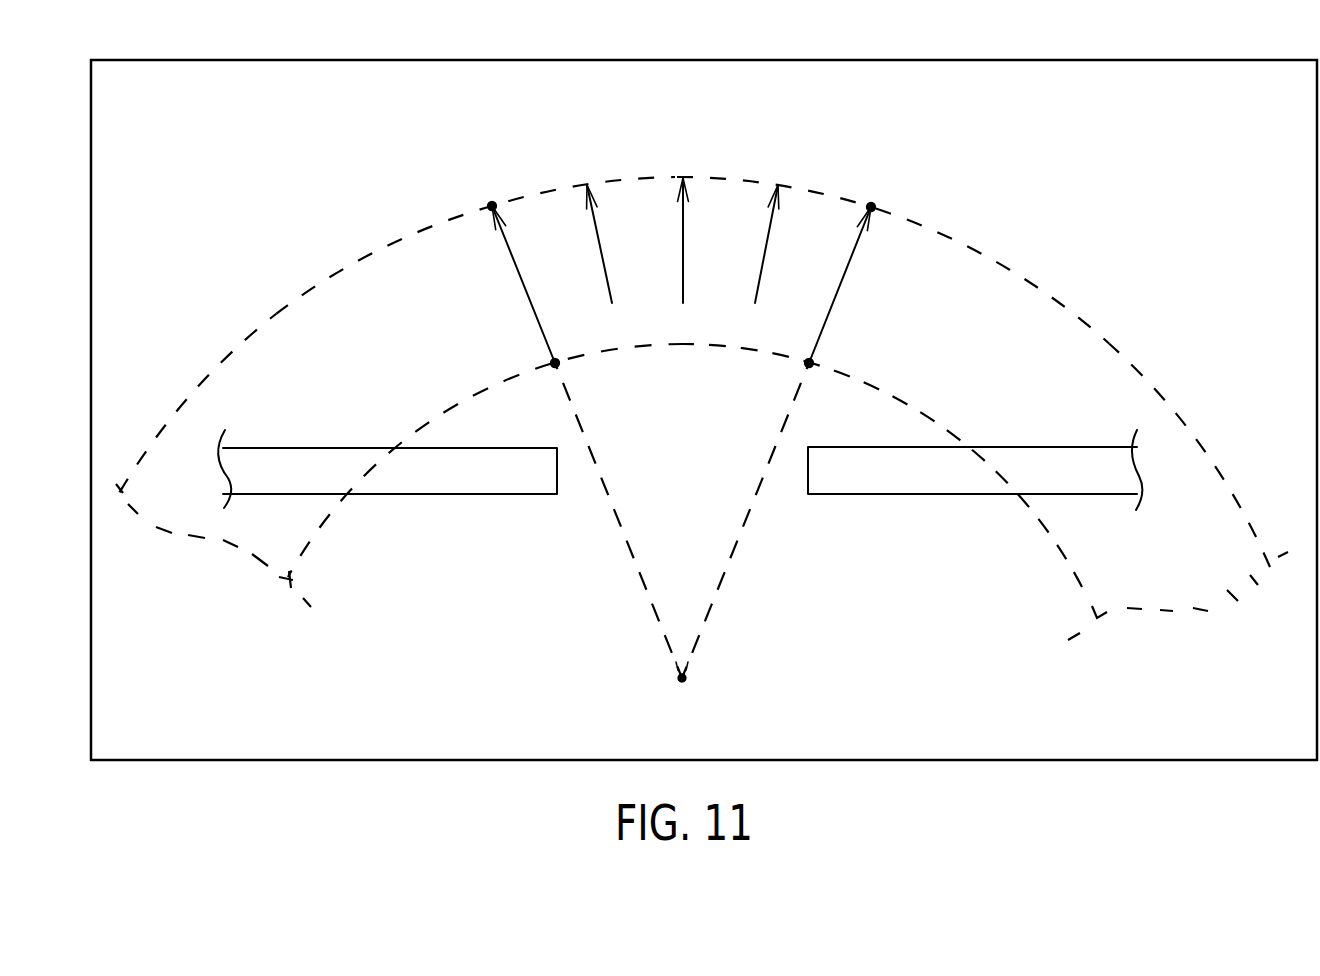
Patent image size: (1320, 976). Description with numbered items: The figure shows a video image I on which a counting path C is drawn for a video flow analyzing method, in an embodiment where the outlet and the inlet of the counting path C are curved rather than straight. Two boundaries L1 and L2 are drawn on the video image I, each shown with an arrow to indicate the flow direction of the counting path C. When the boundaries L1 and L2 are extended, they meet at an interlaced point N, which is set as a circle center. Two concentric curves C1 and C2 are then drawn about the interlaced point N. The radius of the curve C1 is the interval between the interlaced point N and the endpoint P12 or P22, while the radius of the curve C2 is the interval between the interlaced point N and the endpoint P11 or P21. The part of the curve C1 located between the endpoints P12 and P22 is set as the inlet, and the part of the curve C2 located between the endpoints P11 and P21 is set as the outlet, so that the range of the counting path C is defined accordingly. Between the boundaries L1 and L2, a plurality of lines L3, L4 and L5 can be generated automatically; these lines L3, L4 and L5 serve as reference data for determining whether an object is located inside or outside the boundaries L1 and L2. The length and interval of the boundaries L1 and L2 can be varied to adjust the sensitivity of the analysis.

The video image I is at (1153, 57).
The counting path C is at (627, 225).
The curve C1 is at (1055, 537).
The curve C2 is at (1115, 343).
The interlaced point N is at (682, 529).
The endpoint P11 is at (465, 195).
The endpoint P12 is at (530, 349).
The endpoint P21 is at (897, 197).
The endpoint P22 is at (836, 347).
The boundary L1 is at (513, 265).
The boundary L2 is at (853, 258).
The line L3 is at (607, 263).
The line L4 is at (683, 260).
The line L5 is at (758, 262).